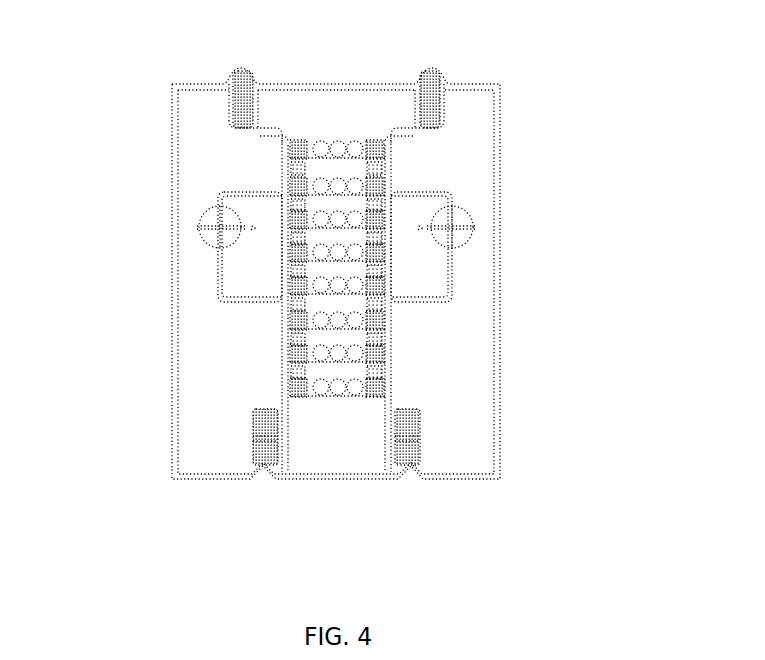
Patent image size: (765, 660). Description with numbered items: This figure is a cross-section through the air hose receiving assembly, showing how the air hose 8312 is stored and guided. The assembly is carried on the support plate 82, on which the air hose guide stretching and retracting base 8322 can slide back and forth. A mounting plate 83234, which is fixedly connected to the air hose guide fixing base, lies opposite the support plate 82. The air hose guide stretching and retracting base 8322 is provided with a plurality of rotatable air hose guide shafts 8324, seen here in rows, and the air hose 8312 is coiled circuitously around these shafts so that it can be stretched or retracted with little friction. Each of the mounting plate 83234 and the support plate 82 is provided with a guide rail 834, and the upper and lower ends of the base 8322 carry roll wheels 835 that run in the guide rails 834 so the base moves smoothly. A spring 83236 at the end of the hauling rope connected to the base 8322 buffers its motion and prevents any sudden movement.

The support plate 82 is at (335, 481).
The guide rail 834 is at (247, 70).
The roll wheel 835 is at (452, 70).
The mounting plate 83234 is at (297, 83).
The air hose 8312 is at (351, 141).
The air hose guide shaft 8324 is at (285, 311).
The air hose guide stretching and retracting base 8322 is at (285, 355).
The spring 83236 is at (198, 212).